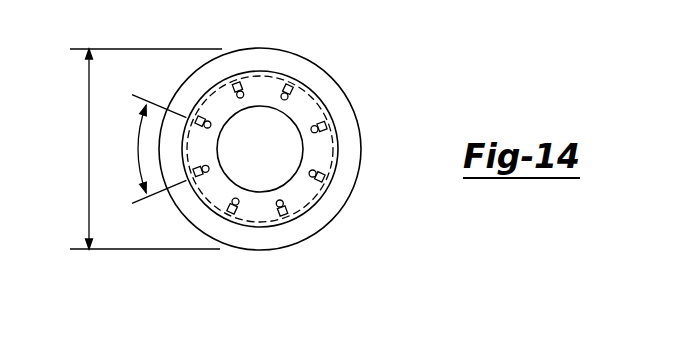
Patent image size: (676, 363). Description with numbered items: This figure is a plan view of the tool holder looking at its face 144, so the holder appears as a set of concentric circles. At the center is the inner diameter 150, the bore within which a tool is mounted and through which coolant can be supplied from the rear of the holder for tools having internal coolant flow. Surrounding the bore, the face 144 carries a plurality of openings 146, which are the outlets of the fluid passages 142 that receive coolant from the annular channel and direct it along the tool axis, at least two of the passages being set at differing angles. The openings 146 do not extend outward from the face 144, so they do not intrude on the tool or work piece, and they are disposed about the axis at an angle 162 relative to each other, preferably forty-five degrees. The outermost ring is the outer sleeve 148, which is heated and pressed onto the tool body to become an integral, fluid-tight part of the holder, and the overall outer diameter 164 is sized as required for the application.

The fluid passages 142 is at (273, 216).
The face 144 is at (312, 110).
The openings 146 is at (313, 172).
The outer sleeve 148 is at (310, 226).
The inner diameter 150 is at (259, 108).
The angle 162 is at (137, 150).
The outer diameter 164 is at (88, 149).